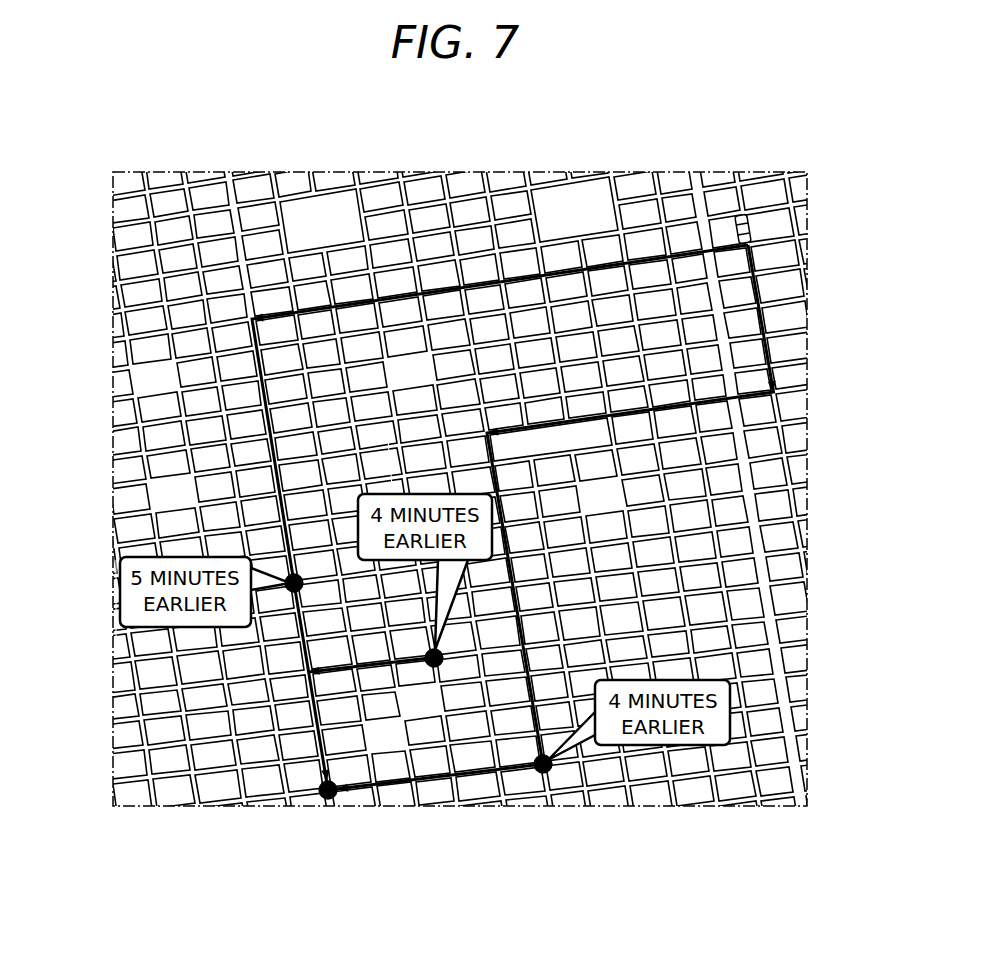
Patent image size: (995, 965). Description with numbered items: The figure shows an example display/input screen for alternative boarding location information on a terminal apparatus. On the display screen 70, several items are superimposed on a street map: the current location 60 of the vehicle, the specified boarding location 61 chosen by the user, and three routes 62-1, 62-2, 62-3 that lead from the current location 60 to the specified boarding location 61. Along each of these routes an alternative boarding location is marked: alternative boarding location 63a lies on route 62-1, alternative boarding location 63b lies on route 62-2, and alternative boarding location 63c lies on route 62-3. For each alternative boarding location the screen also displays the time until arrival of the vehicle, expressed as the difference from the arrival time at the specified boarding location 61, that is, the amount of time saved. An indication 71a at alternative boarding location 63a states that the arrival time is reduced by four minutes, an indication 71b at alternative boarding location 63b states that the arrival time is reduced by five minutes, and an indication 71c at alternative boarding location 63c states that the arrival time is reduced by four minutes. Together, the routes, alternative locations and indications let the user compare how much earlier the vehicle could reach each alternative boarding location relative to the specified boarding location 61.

The display screen 70 is at (224, 156).
The current location 60 is at (756, 222).
The specified boarding location 61 is at (330, 800).
The route 62-1 is at (508, 562).
The route 62-2 is at (268, 429).
The route 62-3 is at (386, 673).
The alternative boarding location 63a is at (548, 768).
The alternative boarding location 63b is at (288, 576).
The alternative boarding location 63c is at (428, 660).
The indication 71a is at (733, 707).
The indication 71b is at (113, 597).
The indication 71c is at (391, 485).